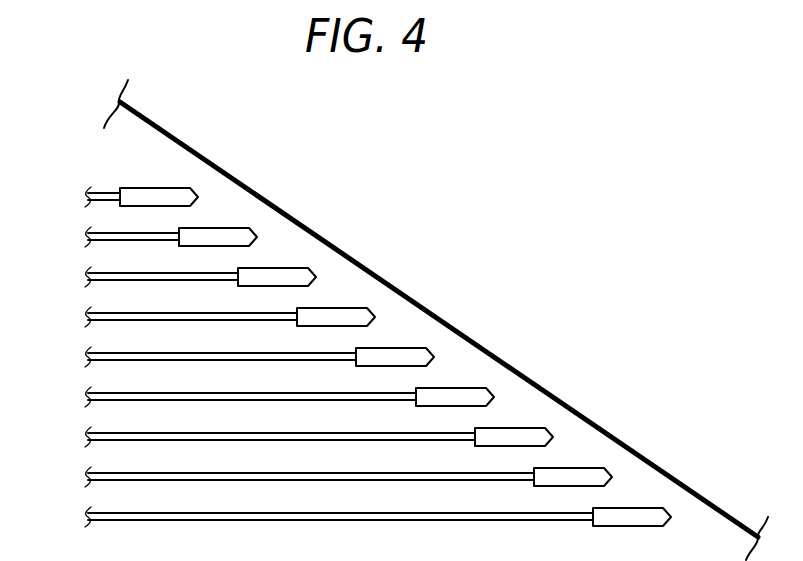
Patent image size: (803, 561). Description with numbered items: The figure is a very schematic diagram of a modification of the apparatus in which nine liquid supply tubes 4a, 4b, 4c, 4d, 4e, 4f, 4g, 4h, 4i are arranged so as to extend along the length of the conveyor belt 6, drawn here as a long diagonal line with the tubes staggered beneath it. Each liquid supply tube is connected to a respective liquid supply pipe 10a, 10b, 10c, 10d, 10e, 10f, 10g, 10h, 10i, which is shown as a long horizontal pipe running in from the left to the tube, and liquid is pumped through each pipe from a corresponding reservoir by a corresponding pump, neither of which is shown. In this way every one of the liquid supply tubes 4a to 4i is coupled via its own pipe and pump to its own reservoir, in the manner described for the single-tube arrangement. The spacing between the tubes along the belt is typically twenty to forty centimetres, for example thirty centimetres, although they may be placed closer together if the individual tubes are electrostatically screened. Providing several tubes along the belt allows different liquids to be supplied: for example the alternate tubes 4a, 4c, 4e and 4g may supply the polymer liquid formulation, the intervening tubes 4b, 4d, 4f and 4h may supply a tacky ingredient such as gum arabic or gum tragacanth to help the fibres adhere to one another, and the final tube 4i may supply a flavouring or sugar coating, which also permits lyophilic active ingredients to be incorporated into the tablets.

The conveyor belt 6 is at (150, 124).
The liquid supply tube 4a is at (165, 197).
The liquid supply tube 4b is at (224, 237).
The liquid supply tube 4c is at (283, 277).
The liquid supply tube 4d is at (342, 317).
The liquid supply tube 4e is at (401, 357).
The liquid supply tube 4f is at (461, 397).
The liquid supply tube 4g is at (520, 437).
The liquid supply tube 4h is at (579, 477).
The liquid supply tube 4i is at (638, 517).
The liquid supply pipe 10a is at (95, 193).
The liquid supply pipe 10b is at (95, 233).
The liquid supply pipe 10c is at (95, 273).
The liquid supply pipe 10d is at (95, 313).
The liquid supply pipe 10e is at (95, 353).
The liquid supply pipe 10f is at (95, 393).
The liquid supply pipe 10g is at (95, 433).
The liquid supply pipe 10h is at (95, 473).
The liquid supply pipe 10i is at (95, 513).